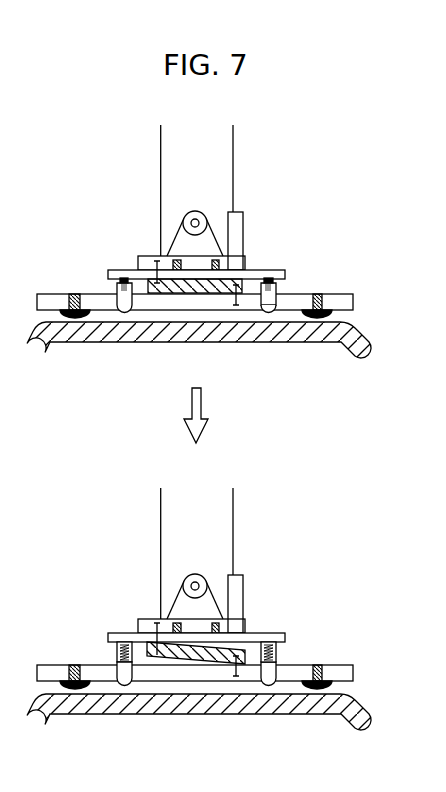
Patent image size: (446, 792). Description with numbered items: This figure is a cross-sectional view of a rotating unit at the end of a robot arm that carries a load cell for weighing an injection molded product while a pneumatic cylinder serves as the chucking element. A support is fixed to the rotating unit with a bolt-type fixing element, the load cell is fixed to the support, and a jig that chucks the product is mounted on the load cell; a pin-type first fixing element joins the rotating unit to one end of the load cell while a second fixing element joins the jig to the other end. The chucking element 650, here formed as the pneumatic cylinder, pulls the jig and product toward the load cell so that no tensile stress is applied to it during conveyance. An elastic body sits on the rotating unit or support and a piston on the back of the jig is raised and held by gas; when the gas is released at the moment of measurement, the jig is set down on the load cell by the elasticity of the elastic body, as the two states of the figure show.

The chucking element 650 is at (269, 313).